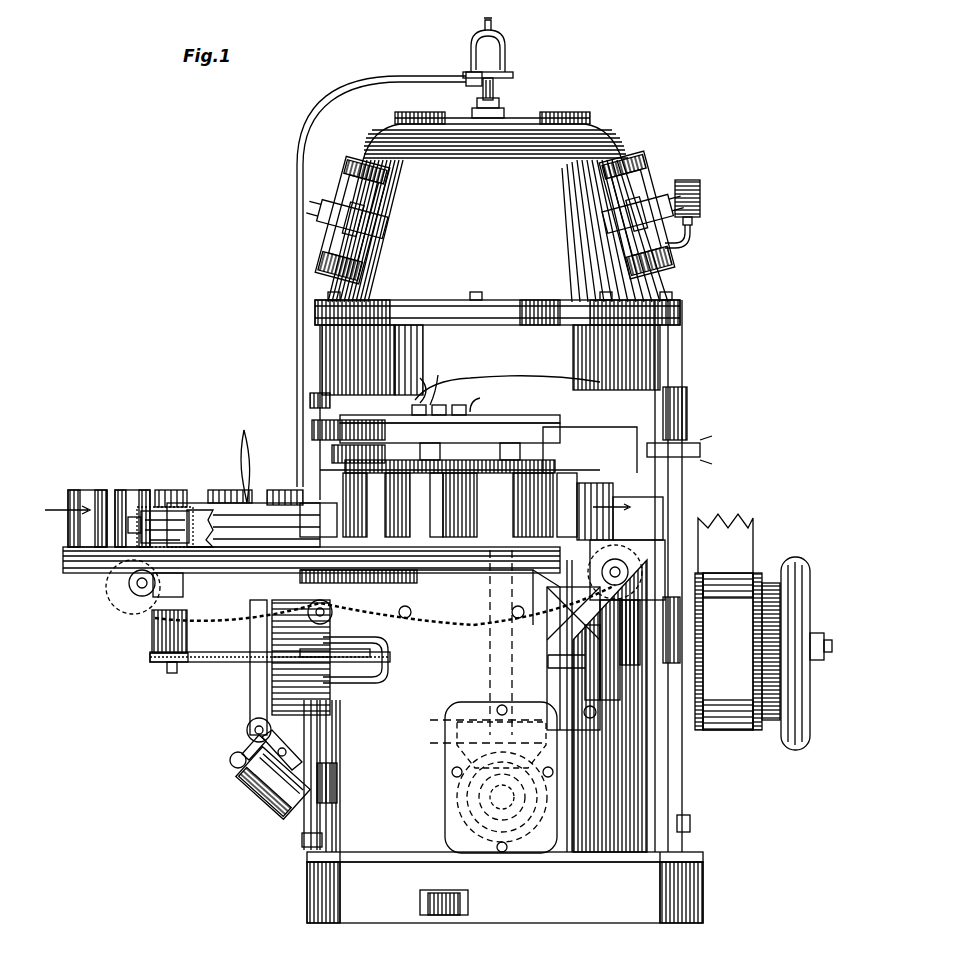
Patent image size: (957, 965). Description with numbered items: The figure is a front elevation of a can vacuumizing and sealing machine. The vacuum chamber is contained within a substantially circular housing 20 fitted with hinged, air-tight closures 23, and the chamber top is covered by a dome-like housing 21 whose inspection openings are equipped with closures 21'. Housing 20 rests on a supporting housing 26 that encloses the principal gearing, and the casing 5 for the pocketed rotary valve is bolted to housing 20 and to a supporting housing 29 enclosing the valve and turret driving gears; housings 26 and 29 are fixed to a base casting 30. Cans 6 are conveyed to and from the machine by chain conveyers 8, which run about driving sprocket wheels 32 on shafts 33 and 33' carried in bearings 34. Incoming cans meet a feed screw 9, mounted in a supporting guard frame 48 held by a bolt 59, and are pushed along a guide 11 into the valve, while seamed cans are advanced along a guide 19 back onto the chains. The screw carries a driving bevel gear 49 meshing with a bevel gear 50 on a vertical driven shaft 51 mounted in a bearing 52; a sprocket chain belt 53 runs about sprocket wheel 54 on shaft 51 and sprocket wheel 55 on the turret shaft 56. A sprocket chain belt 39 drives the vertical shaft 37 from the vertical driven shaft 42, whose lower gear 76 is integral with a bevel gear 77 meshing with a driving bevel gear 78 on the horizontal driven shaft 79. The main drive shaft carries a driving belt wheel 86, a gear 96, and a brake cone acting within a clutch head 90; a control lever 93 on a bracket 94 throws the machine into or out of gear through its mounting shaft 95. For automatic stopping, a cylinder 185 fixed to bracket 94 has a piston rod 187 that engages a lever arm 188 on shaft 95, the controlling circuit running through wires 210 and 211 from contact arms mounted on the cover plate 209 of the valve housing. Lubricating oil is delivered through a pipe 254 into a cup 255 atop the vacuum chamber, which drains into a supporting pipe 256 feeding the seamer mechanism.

The cup 255 is at (507, 44).
The supporting pipe 256 is at (496, 90).
The pipe 254 is at (412, 80).
The dome-like housing 21 is at (498, 207).
The closures 21' is at (496, 215).
The housing 20 is at (655, 360).
The closures 23 is at (312, 402).
The casing 5 is at (470, 440).
The circuit wire 210 is at (452, 385).
The circuit wire 211 is at (425, 400).
The cover plate 209 is at (470, 395).
The bevel gear 50 is at (65, 560).
The cans 6 is at (105, 490).
The driving bevel gear 49 is at (148, 490).
The feed screw 9 is at (195, 505).
The supporting guard frame 48 is at (232, 490).
The bolt 59 is at (297, 490).
The control lever 93 is at (245, 430).
The shaft 33' is at (108, 587).
The driving sprocket wheels 32 is at (118, 598).
The bearings 34 is at (150, 590).
The bearing 52 is at (186, 590).
The sprocket wheel 54 is at (152, 660).
The vertical driven shaft 51 is at (170, 676).
The chain conveyers 8 is at (425, 626).
The clutch head 90 is at (295, 615).
The sprocket chain belt 53 is at (240, 665).
The gear 96 is at (252, 702).
The mounting shaft 95 is at (250, 730).
The bracket 94 is at (262, 745).
The lever arm 188 is at (232, 760).
The piston rod 187 is at (245, 782).
The cylinder 185 is at (262, 815).
The guide 11 is at (395, 535).
The guide 19 is at (470, 525).
The sprocket wheel 55 is at (385, 655).
The vertical driven shaft 56 is at (380, 670).
The vertical driven shaft 42 is at (490, 685).
The sprocket chain belt 39 is at (565, 672).
The gear 76 is at (445, 765).
The bevel gear 77 is at (467, 790).
The driving bevel gear 78 is at (479, 805).
The horizontal driven shaft 79 is at (490, 820).
The base casting 30 is at (370, 895).
The supporting housing 29 is at (330, 830).
The supporting housing 26 is at (660, 795).
The shaft 33 is at (662, 616).
The vertical shaft 37 is at (705, 628).
The driving belt wheel 86 is at (786, 560).